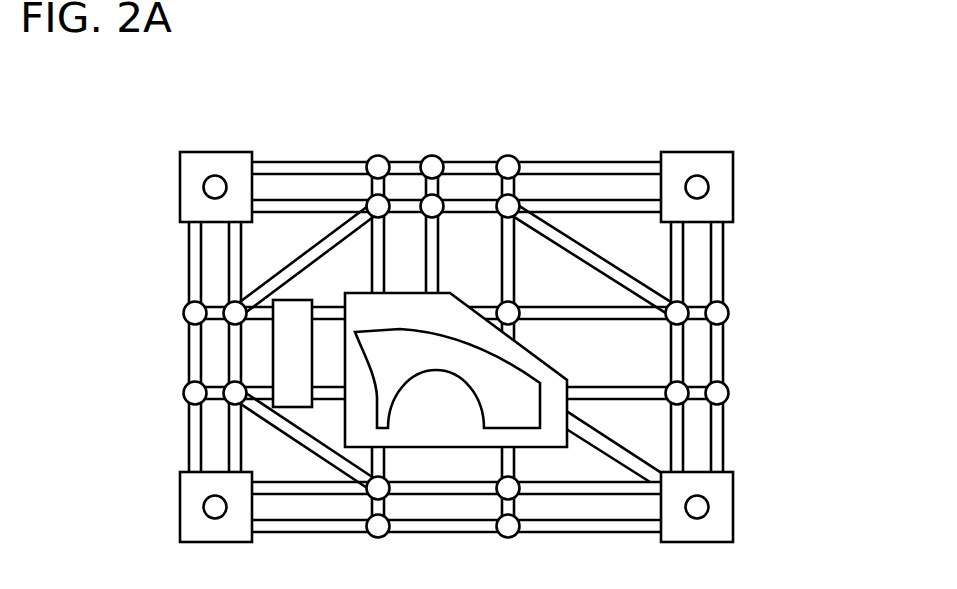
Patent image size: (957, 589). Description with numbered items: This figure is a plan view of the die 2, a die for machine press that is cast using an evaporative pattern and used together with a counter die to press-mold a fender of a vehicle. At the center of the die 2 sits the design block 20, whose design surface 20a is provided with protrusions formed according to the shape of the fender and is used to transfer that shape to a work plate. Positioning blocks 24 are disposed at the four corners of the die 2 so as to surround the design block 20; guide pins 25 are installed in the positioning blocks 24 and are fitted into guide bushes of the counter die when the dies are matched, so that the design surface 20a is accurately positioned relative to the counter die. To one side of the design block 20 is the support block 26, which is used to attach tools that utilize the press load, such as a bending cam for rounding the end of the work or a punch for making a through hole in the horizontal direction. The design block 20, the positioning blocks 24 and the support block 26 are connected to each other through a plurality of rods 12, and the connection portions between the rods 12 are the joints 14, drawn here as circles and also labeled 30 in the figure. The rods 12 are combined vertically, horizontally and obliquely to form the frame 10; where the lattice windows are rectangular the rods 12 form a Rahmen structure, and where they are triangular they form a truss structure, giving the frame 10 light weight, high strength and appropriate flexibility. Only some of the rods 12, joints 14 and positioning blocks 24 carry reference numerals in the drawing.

The die 2 is at (747, 107).
The frame 10 is at (456, 300).
The rod 12 is at (343, 232).
The joint 14 is at (456, 316).
The support block 30 is at (432, 167).
The design block 20 is at (532, 362).
The design surface 20a is at (528, 422).
The positioning block 24 is at (715, 488).
The guide pin 25 is at (697, 512).
The support block 26 is at (293, 364).